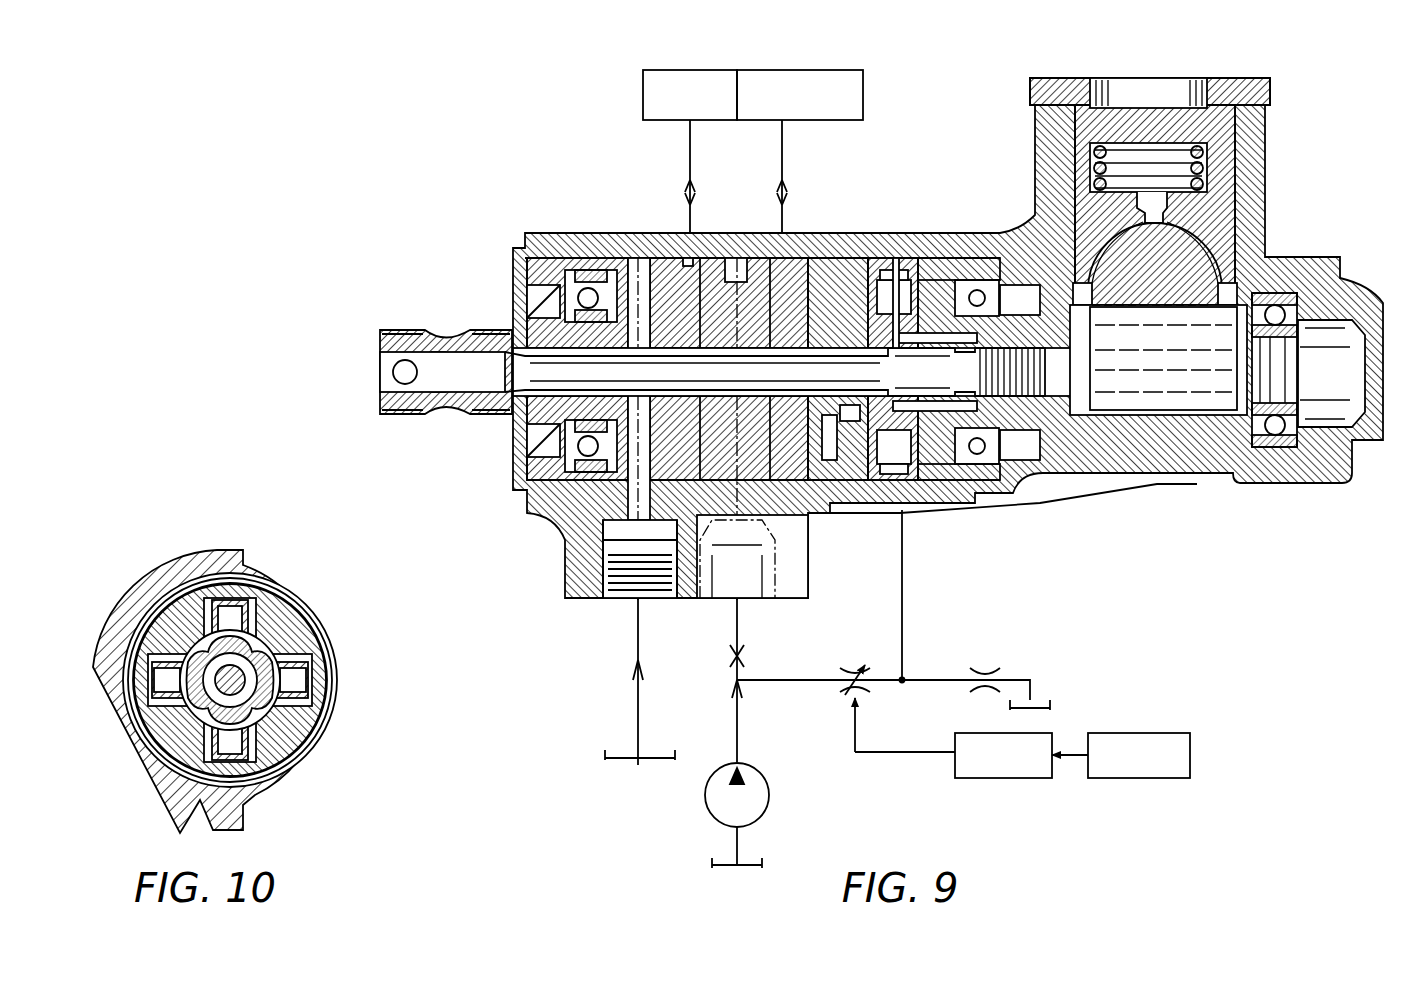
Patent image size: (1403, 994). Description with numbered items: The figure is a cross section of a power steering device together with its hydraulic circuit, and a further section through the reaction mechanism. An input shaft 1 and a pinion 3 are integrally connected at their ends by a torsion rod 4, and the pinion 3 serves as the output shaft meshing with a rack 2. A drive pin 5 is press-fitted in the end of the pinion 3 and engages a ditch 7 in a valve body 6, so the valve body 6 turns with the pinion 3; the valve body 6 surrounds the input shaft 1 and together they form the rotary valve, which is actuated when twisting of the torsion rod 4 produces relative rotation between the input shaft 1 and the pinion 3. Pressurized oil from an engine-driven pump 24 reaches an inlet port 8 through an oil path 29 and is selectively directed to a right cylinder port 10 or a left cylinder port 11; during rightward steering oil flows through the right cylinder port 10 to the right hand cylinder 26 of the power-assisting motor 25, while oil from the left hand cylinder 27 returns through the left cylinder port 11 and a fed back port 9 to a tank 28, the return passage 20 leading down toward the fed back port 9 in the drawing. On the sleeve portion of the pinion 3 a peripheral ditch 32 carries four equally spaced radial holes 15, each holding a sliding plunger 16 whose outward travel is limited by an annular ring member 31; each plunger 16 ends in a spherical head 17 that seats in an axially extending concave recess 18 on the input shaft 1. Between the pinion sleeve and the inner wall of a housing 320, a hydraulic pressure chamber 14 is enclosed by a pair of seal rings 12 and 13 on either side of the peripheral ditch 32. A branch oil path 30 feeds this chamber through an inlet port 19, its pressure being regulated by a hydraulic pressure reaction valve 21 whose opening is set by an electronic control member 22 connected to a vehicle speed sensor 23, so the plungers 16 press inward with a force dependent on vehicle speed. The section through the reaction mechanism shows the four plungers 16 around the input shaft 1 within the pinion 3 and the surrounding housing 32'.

In FIG. 9, the input shaft 1 is at (404, 330).
In FIG. 9, the rack 2 is at (1183, 252).
In FIG. 9, the pinion 3 is at (1190, 392).
In FIG. 10, the pinion 3 is at (300, 740).
In FIG. 9, the torsion rod 4 is at (457, 352).
In FIG. 9, the drive pin 5 is at (823, 463).
In FIG. 9, the valve body 6 is at (650, 265).
In FIG. 9, the ditch 7 is at (826, 462).
In FIG. 9, the inlet port 8 is at (733, 602).
In FIG. 9, the fed back port 9 is at (633, 602).
In FIG. 9, the right cylinder port 10 is at (688, 233).
In FIG. 9, the left cylinder port 11 is at (781, 233).
In FIG. 9, the seal ring 12 is at (837, 262).
In FIG. 9, the seal ring 13 is at (965, 245).
In FIG. 9, the hydraulic pressure chamber 14 is at (870, 262).
In FIG. 9, the holes 15 is at (885, 455).
In FIG. 10, the holes 15 is at (310, 685).
In FIG. 9, the plunger 16 is at (925, 455).
In FIG. 10, the plunger 16 is at (300, 652).
In FIG. 9, the spherical head 17 is at (1020, 440).
In FIG. 9, the concave recess 18 is at (848, 420).
In FIG. 9, the inlet port 19 is at (893, 510).
In FIG. 9, the drain passage 20 is at (637, 482).
In FIG. 9, the hydraulic pressure reaction valve 21 is at (860, 692).
In FIG. 9, the electronic control member 22 is at (1000, 778).
In FIG. 9, the vehicle speed sensor 23 is at (1137, 778).
In FIG. 9, the pump 24 is at (770, 797).
In FIG. 9, the power-assisting motor 25 is at (740, 72).
In FIG. 9, the right hand cylinder 26 is at (682, 80).
In FIG. 9, the left hand cylinder 27 is at (822, 80).
In FIG. 9, the tank 28 is at (625, 762).
In FIG. 9, the oil path 29 is at (737, 730).
In FIG. 9, the oil path 30 is at (793, 682).
In FIG. 9, the annular ring member 31 is at (893, 245).
In FIG. 10, the annular ring member 31 is at (262, 600).
In FIG. 9, the peripheral ditch 32 is at (917, 335).
In FIG. 10, the housing 32' is at (205, 690).
In FIG. 9, the housing 320 is at (551, 233).